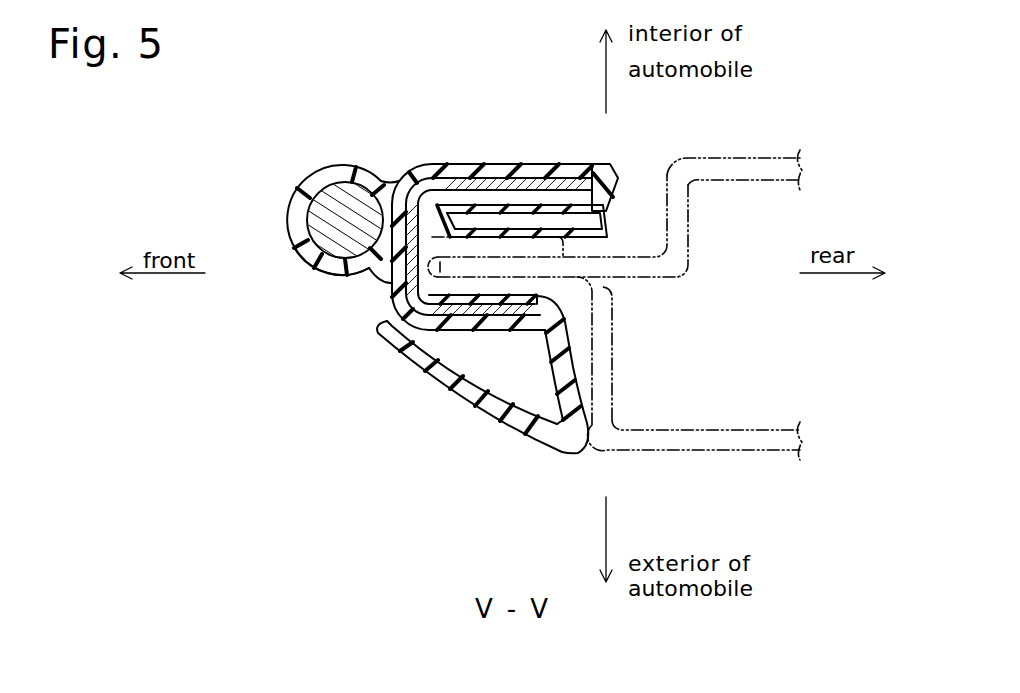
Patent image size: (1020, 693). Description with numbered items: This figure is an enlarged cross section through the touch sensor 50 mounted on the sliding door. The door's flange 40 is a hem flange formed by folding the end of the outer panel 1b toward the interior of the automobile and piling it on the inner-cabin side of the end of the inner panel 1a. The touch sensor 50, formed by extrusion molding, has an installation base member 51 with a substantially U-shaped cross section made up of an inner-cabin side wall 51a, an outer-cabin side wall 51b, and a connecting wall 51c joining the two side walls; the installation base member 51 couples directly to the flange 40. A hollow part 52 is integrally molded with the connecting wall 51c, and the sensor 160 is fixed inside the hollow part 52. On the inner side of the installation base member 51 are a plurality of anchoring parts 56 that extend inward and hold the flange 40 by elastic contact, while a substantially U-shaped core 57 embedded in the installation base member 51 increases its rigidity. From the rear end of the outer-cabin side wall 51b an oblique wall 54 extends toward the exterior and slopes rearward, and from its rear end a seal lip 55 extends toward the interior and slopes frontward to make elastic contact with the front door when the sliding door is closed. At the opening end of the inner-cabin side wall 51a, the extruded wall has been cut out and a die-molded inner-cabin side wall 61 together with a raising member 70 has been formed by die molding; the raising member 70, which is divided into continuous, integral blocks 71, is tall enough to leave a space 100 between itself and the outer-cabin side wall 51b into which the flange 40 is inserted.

The inner panel 1a is at (640, 273).
The outer panel 1b is at (617, 303).
The flange 40 is at (410, 165).
The touch sensor 50 is at (494, 295).
The installation base member 51 is at (500, 165).
The inner-cabin side wall 51a is at (448, 166).
The outer-cabin side wall 51b is at (471, 331).
The connecting wall 51c is at (380, 287).
The hollow part 52 is at (292, 242).
The oblique wall 54 is at (577, 380).
The seal lip 55 is at (445, 396).
The anchoring parts 56 is at (468, 181).
The core 57 is at (527, 182).
The die-molded inner-cabin side wall 61 is at (605, 182).
The raising member 70 is at (621, 223).
The blocks 71 is at (585, 240).
The space 100 is at (483, 263).
The sensor 160 is at (325, 210).